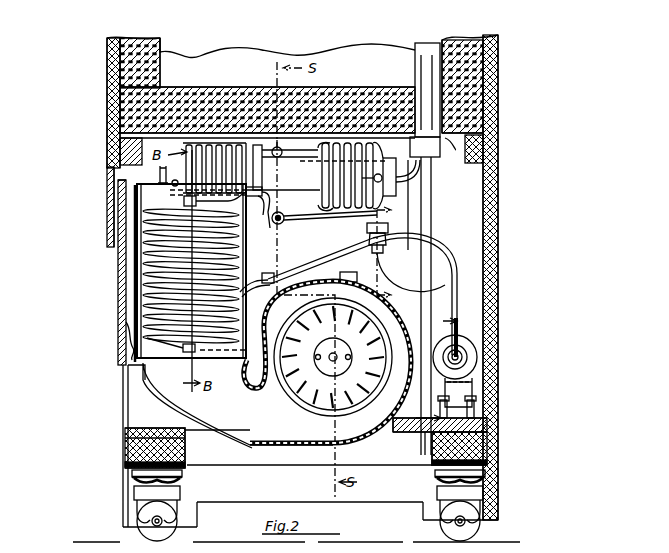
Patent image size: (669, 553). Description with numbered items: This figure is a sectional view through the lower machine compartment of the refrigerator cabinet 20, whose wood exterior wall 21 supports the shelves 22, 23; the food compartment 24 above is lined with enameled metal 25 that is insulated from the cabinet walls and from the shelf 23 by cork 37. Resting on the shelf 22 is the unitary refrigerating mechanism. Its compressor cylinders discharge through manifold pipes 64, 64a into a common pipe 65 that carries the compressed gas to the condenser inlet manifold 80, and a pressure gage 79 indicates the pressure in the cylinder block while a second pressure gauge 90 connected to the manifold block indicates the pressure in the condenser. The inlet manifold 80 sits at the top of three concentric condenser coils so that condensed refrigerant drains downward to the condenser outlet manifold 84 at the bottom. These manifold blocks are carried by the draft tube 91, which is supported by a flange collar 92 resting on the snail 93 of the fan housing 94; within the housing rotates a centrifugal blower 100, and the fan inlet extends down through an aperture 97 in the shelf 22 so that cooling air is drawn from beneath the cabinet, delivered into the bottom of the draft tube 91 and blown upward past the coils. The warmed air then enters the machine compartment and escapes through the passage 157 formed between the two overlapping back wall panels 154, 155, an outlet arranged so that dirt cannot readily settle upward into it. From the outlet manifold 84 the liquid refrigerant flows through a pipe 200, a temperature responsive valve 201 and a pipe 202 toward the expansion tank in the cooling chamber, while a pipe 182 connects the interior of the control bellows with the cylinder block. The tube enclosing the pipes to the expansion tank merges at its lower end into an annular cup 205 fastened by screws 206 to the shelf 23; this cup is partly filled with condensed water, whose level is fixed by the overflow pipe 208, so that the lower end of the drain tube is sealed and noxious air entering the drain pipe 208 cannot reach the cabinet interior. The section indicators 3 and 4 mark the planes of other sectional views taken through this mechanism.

The refrigerator cabinet 20 is at (420, 60).
The wood exterior wall 21 is at (490, 45).
The shelf 22 is at (192, 440).
The shelf 23 is at (500, 120).
The food compartment 24 is at (184, 56).
The enameled metal 25 is at (170, 48).
The cork 37 is at (108, 73).
The manifold pipe 64 is at (285, 214).
The manifold pipe 64a is at (256, 188).
The common pipe 65 is at (258, 220).
The pressure gage 79 is at (246, 141).
The condenser inlet manifold 80 is at (184, 202).
The condenser outlet manifold 84 is at (125, 360).
The pressure gauge 90 is at (213, 141).
The draft tube 91 is at (138, 302).
The flange collar 92 is at (128, 335).
The snail 93 is at (140, 382).
The fan housing 94 is at (308, 452).
The aperture 97 is at (390, 434).
The blower 100 is at (306, 408).
The panel 154 is at (106, 186).
The panel 155 is at (120, 272).
The passage 157 is at (112, 222).
The pipe 182 is at (438, 260).
The pipe 200 is at (309, 270).
The temperature responsive valve 201 is at (390, 250).
The pipe 202 is at (418, 200).
The annular cup 205 is at (424, 168).
The screws 206 is at (500, 150).
The pipe 208 is at (432, 305).
The section line 3- 3 is at (390, 253).
The section line 4-4 / pulley 4 is at (438, 384).